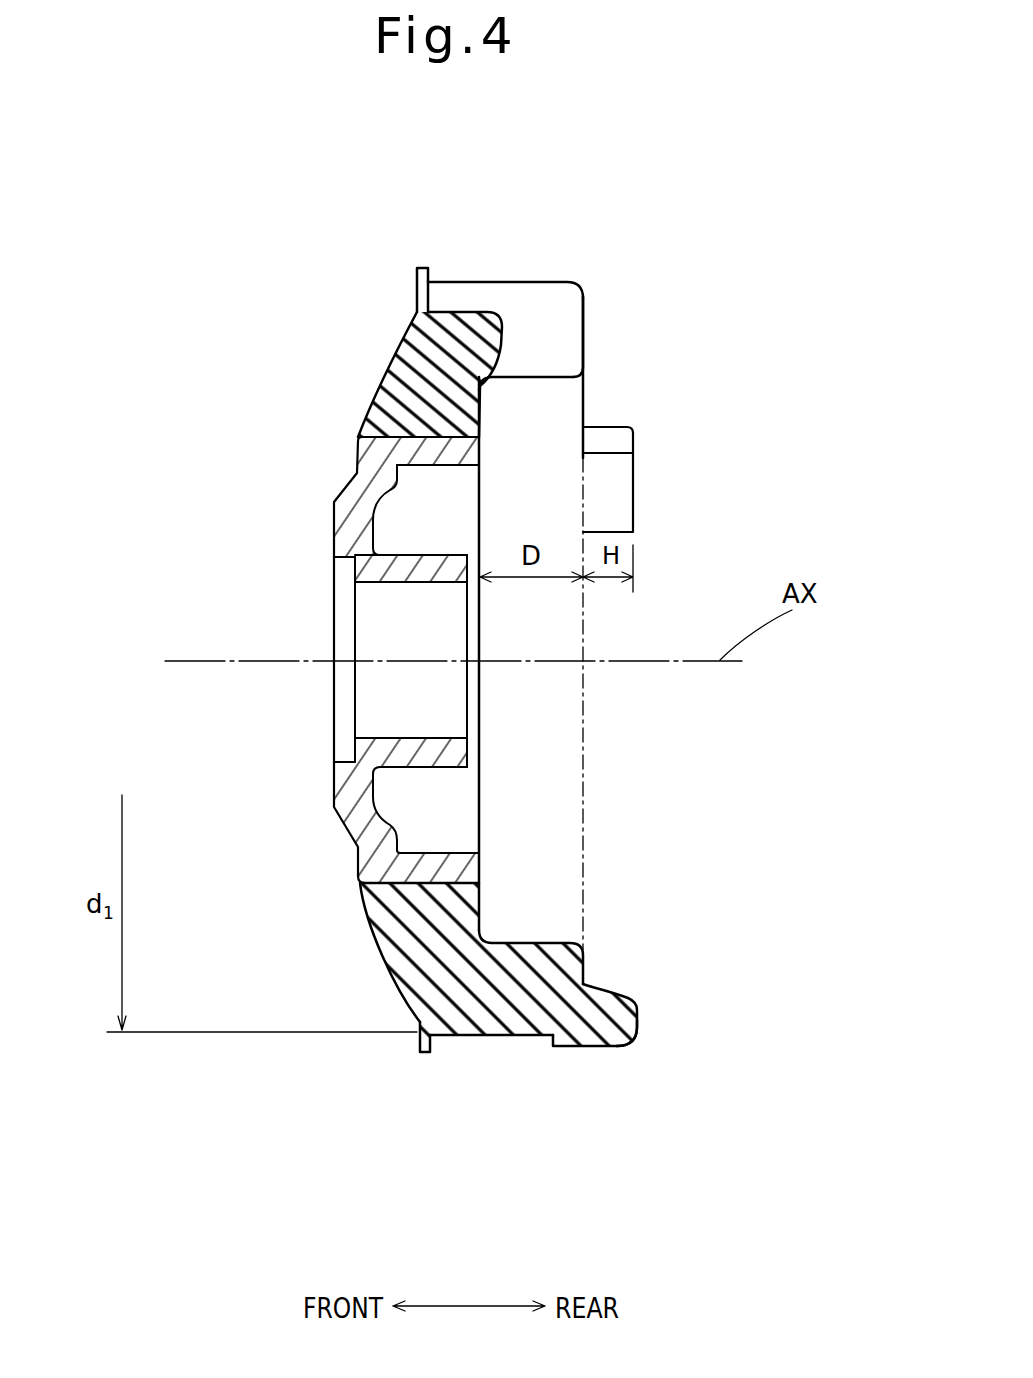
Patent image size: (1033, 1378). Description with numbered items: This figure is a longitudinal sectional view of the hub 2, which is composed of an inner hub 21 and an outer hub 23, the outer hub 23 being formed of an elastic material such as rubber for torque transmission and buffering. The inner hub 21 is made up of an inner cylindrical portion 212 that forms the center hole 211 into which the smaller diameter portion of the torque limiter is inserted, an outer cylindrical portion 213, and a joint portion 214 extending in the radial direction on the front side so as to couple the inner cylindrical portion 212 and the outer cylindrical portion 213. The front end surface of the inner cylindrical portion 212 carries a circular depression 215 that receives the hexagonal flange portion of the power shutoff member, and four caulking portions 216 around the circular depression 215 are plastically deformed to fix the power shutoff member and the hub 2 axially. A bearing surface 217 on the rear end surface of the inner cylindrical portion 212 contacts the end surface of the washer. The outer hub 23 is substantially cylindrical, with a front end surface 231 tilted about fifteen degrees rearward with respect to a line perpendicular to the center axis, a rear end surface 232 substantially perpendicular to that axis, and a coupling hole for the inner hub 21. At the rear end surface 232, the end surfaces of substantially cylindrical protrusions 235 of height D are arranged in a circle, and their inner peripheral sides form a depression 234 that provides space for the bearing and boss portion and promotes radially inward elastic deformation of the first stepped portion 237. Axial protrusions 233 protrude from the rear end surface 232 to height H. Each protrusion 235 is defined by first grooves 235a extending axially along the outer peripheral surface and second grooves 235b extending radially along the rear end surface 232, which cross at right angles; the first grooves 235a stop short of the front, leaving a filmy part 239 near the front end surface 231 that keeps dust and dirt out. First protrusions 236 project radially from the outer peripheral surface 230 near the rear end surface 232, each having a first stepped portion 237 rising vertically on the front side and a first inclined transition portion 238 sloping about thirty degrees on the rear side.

The hub 2 is at (213, 883).
The inner hub 21 is at (360, 847).
The outer hub 23 is at (378, 927).
The center hole 211 is at (393, 687).
The inner cylindrical portion 212 is at (385, 597).
The outer cylindrical portion 213 is at (392, 462).
The joint portion 214 is at (340, 527).
The circular depression 215 is at (340, 742).
The caulking portions 216 is at (337, 557).
The bearing surface 217 is at (467, 758).
The outer peripheral surface 230 is at (437, 1055).
The front end surface 231 is at (383, 350).
The rear end surface 232 is at (587, 348).
The axial protrusions 233 is at (623, 490).
The depression 234 is at (540, 850).
The protrusions 235 is at (670, 163).
The first grooves 235a is at (483, 297).
The second grooves 235b is at (540, 340).
The first protrusions 236 is at (575, 1048).
The first stepped portion 237 is at (547, 1040).
The first inclined transition portion 238 is at (615, 1044).
The filmy part 239 is at (413, 292).